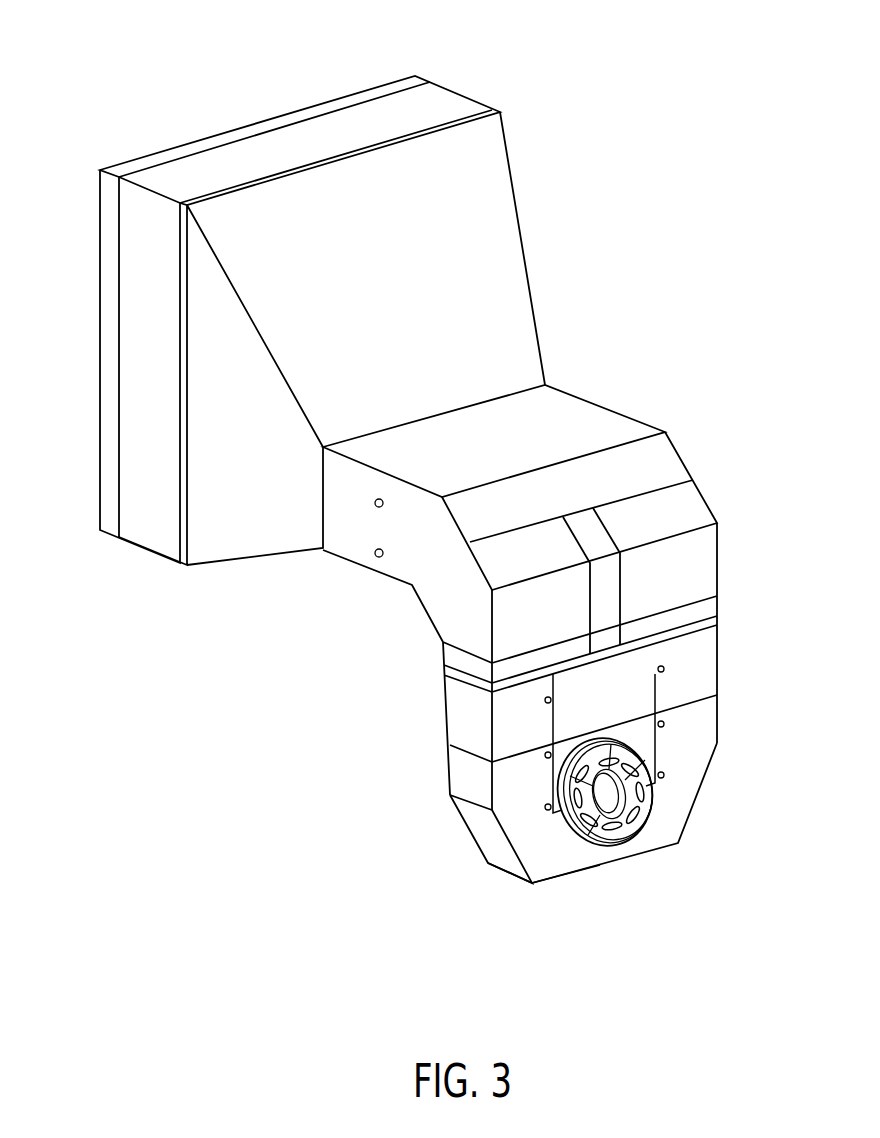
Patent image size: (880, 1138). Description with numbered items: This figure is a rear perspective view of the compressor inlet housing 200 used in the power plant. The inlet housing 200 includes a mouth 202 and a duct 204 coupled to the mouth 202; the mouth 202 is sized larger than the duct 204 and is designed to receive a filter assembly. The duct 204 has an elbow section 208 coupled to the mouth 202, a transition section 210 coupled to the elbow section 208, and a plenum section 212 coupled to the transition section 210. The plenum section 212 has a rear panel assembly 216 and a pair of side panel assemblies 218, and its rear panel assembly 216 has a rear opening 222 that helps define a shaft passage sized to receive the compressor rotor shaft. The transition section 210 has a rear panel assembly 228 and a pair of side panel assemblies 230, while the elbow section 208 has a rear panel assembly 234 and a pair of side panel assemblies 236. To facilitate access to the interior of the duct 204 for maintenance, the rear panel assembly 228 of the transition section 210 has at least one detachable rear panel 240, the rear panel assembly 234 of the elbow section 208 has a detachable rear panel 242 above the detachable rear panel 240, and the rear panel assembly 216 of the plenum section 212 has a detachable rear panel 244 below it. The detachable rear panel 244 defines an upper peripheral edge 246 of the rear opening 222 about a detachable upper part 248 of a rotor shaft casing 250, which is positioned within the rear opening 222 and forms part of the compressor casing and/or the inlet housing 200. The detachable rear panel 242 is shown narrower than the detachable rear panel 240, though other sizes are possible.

The compressor inlet housing 200 is at (708, 93).
The mouth 202 is at (523, 203).
The duct 204 is at (688, 442).
The elbow section 208 is at (705, 493).
The transition section 210 is at (599, 733).
The plenum section 212 is at (713, 787).
The rear panel assembly 216 is at (540, 858).
The side panel assemblies 218 is at (490, 838).
The rear opening 222 is at (637, 830).
The rear panel assembly 228 is at (695, 673).
The side panel assemblies 230 is at (467, 715).
The rear panel assembly 234 is at (698, 558).
The side panel assemblies 236 is at (443, 583).
The detachable rear panel 240 is at (578, 718).
The detachable rear panel 242 is at (607, 600).
The detachable rear panel 244 is at (645, 735).
The upper peripheral edge 246 is at (570, 768).
The detachable upper part 248 is at (503, 870).
The rotor shaft casing 250 is at (588, 835).